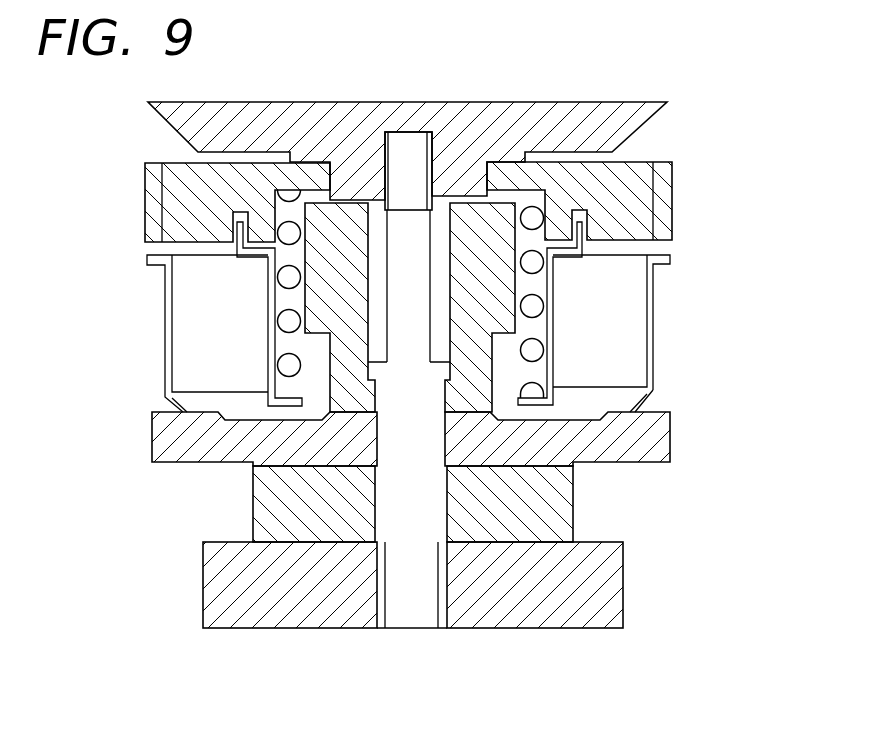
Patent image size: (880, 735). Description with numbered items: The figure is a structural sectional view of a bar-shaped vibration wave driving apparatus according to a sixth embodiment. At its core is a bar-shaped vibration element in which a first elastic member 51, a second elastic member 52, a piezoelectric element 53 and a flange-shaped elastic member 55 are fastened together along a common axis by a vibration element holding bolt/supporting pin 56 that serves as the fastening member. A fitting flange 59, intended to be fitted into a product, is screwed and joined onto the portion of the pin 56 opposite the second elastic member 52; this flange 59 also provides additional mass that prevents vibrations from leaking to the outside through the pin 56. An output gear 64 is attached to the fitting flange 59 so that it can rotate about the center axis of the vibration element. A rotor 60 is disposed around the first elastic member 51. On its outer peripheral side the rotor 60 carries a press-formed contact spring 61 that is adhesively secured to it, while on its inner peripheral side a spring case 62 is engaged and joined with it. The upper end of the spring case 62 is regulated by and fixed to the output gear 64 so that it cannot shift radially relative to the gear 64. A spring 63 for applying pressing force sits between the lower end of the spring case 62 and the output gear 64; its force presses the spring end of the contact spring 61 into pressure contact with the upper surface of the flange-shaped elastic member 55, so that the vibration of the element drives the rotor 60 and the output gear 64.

The first elastic member 51 is at (312, 296).
The second elastic member 52 is at (308, 614).
The piezoelectric element 53 is at (258, 507).
The flange-shaped elastic member 55 is at (667, 447).
The vibration element holding bolt/supporting pin 56 is at (410, 137).
The fitting flange 59 is at (583, 107).
The rotor 60 is at (626, 317).
The contact spring 61 is at (655, 388).
The spring case 62 is at (540, 407).
The spring 63 is at (283, 323).
The output gear 64 is at (643, 202).